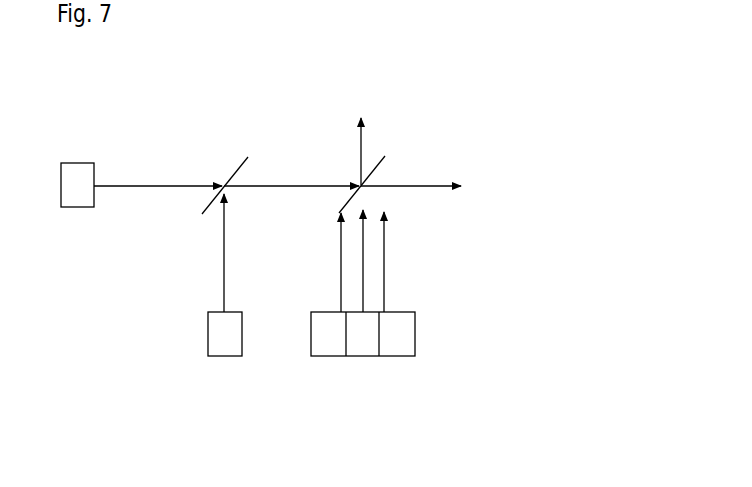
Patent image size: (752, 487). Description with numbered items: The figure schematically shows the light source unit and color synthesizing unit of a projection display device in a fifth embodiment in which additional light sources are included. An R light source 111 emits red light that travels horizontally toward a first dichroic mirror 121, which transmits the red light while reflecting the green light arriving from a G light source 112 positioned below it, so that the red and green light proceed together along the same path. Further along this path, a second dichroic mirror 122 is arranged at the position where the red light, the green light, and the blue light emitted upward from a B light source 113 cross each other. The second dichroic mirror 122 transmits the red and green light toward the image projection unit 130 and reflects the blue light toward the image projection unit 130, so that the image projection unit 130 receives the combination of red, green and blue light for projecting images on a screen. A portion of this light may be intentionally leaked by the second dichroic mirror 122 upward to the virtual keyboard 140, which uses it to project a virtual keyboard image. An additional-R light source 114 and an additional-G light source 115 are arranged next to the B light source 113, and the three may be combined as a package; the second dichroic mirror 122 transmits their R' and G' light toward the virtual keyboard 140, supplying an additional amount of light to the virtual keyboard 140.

The R light source 111 is at (78, 162).
The G light source 112 is at (224, 357).
The B light source 113 is at (362, 357).
The additional-R (R') light source 114 is at (325, 357).
The additional-G (G') light source 115 is at (397, 357).
The first dichroic mirror 121 is at (208, 202).
The second dichroic mirror 122 is at (345, 203).
The image projection unit 130 is at (499, 175).
The virtual keyboard 140 is at (352, 90).